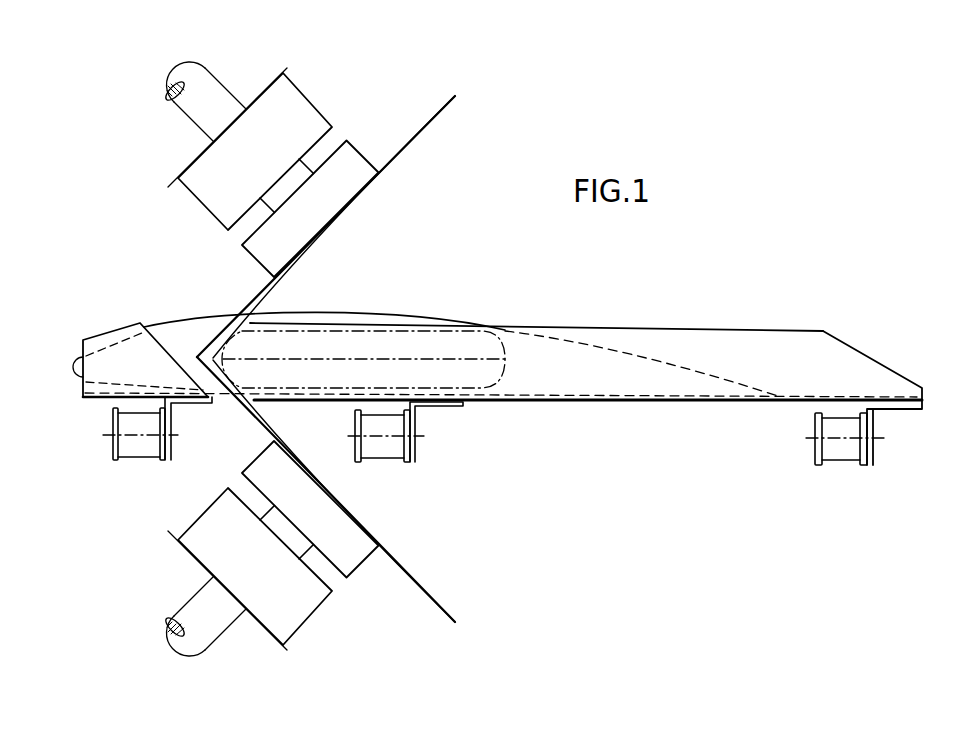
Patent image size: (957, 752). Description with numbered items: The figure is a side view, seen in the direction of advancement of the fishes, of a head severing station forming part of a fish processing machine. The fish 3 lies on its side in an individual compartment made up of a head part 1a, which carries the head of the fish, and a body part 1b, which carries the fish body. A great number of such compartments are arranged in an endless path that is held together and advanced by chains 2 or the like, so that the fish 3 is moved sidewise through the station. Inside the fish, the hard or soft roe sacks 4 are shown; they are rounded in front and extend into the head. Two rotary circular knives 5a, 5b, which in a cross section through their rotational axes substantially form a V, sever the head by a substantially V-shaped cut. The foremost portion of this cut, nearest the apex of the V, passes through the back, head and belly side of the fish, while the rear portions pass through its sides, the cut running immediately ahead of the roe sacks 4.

The head part 1a is at (131, 323).
The body part 1b is at (877, 362).
The chains 2 is at (157, 460).
The fish 3 is at (590, 342).
The roe sacks 4 is at (483, 357).
The rotary circular knife 5a is at (429, 128).
The rotary circular knife 5b is at (441, 603).